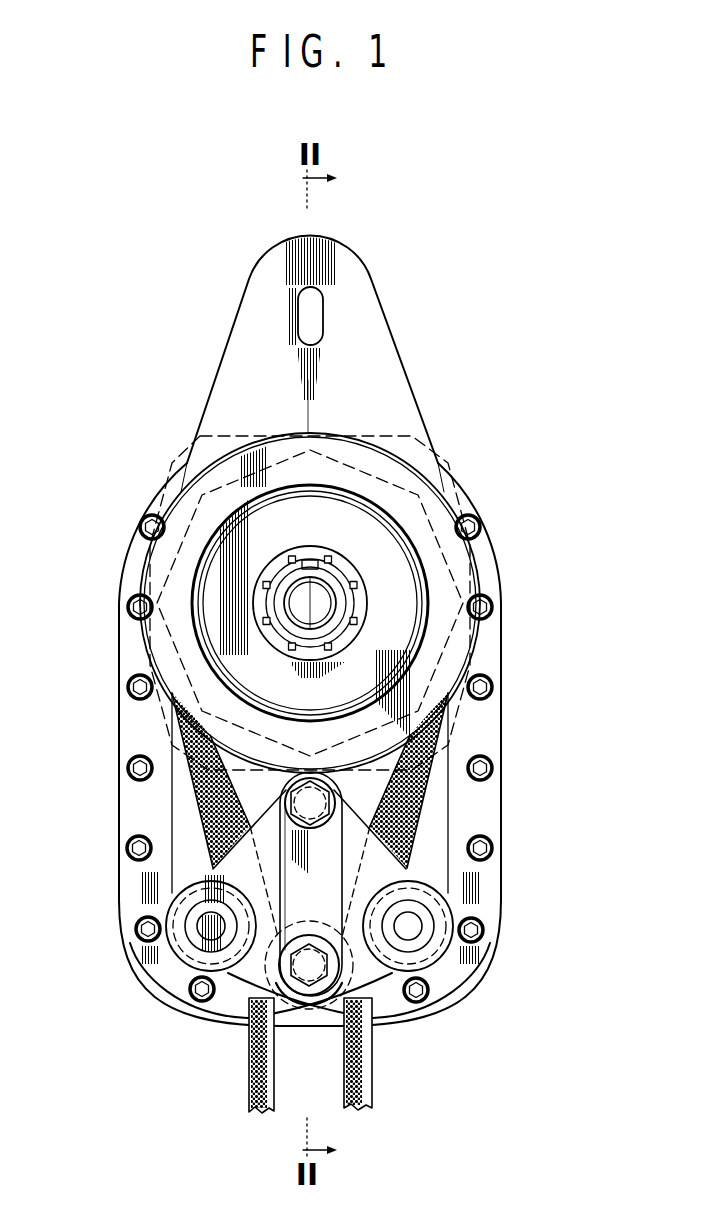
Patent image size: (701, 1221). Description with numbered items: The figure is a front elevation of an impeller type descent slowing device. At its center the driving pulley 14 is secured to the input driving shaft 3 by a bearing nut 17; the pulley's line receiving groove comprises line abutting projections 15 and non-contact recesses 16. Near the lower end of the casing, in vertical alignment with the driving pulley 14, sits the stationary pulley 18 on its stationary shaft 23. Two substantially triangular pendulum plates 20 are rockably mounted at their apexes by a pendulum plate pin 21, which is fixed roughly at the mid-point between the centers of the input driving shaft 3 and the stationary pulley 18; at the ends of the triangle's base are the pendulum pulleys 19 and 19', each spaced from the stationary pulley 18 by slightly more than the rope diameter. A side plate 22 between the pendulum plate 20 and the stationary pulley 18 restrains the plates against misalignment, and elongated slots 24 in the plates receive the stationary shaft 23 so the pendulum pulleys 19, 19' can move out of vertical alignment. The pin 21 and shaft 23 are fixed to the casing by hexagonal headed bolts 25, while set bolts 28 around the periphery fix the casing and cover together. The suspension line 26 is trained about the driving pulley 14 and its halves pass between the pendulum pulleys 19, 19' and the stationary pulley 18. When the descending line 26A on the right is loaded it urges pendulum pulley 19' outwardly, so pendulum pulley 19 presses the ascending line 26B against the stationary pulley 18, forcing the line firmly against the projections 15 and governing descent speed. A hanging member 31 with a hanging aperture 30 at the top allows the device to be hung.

The input driving shaft 3 is at (330, 620).
The driving pulley 14 is at (455, 580).
The line abutting projections 15 is at (448, 467).
The non-contact recesses 16 is at (375, 447).
The bearing nut 17 is at (350, 615).
The stationary pulley 18 is at (307, 1012).
The pendulum pulley 19 is at (182, 930).
The pendulum pulley 19' is at (442, 934).
The pendulum plate 20 is at (405, 1012).
The pendulum plate pin 21 is at (343, 801).
The side plate 22 is at (393, 858).
The stationary shaft 23 is at (302, 922).
The elongated slots 24 is at (246, 1008).
The hexagonal headed bolts 25 is at (308, 829).
The suspension line 26 is at (222, 790).
The descending line 26A is at (362, 1112).
The ascending line 26B is at (260, 1118).
The set bolts 28 is at (127, 848).
The hanging aperture 30 is at (322, 309).
The hanging member 31 is at (380, 328).